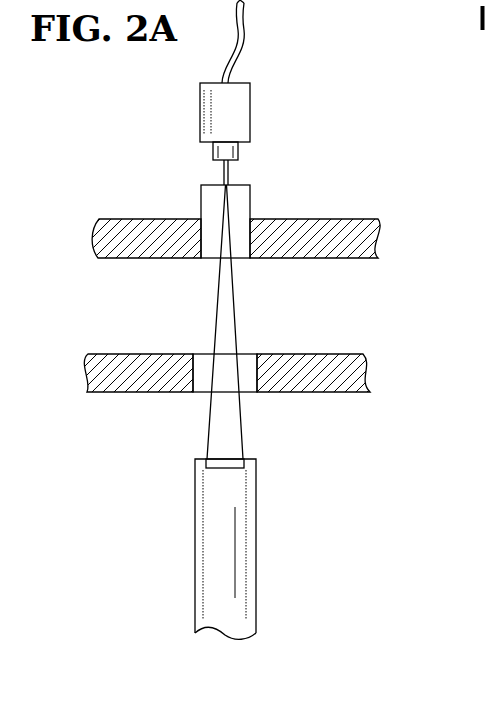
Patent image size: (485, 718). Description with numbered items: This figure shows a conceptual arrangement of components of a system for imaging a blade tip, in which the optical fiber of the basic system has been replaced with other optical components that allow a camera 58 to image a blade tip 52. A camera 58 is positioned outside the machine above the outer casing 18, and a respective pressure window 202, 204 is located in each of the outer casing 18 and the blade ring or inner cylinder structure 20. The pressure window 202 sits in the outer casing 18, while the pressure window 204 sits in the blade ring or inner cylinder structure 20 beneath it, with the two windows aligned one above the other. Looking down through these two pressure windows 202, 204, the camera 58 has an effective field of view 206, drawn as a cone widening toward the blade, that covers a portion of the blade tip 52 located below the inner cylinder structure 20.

The camera 58 is at (241, 114).
The pressure window 202 is at (242, 193).
The outer casing 18 is at (340, 219).
The effective field of view 206 is at (225, 303).
The pressure window 204 is at (243, 352).
The blade ring or inner cylinder structure 20 is at (298, 392).
The blade tip 52 is at (248, 453).